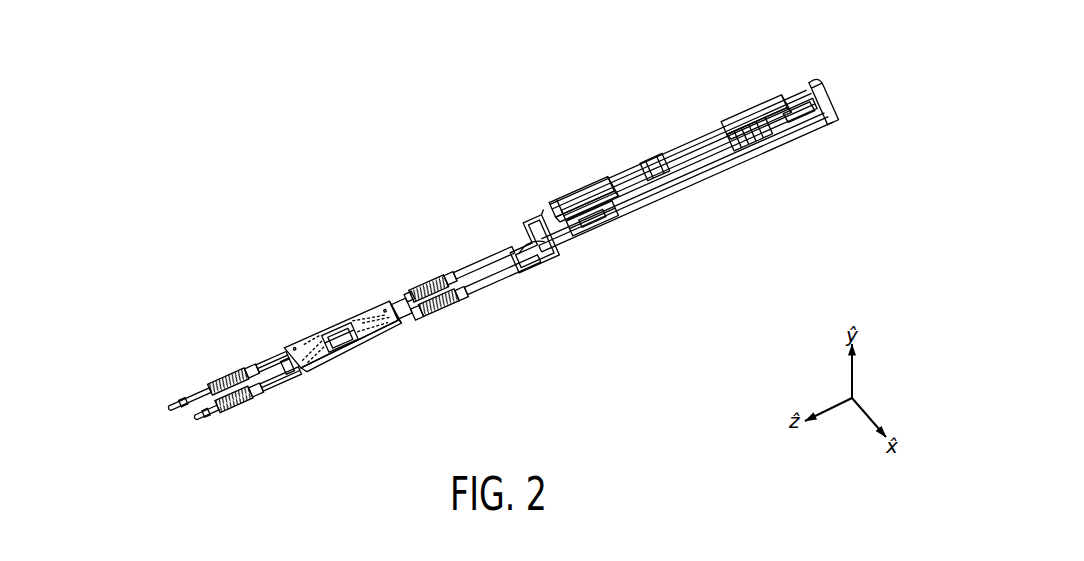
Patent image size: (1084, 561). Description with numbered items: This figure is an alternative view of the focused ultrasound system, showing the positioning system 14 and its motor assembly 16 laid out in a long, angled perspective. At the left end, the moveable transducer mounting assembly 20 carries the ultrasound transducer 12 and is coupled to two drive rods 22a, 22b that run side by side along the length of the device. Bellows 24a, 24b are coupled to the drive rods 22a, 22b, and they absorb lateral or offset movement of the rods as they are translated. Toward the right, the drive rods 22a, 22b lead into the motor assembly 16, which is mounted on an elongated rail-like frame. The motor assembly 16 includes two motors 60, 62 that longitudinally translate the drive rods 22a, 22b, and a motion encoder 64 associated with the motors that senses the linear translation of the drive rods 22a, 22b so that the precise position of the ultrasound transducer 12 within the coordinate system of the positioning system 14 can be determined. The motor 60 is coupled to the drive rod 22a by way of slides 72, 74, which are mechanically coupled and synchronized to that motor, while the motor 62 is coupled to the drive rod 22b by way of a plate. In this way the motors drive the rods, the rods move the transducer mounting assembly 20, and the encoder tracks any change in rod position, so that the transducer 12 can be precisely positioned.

The ultrasound transducer 12 is at (336, 328).
The positioning system 14 is at (384, 404).
The motor assembly 16 is at (719, 244).
The transducer mounting assembly 20 is at (299, 331).
The drive rod 22a is at (188, 399).
The drive rod 22b is at (213, 419).
The bellows 24a is at (232, 377).
The bellows 24b is at (251, 402).
The motor 60 is at (610, 226).
The motor 62 is at (656, 156).
The motion encoder 64 is at (768, 129).
The slide 72 is at (600, 178).
The slide 74 is at (733, 114).